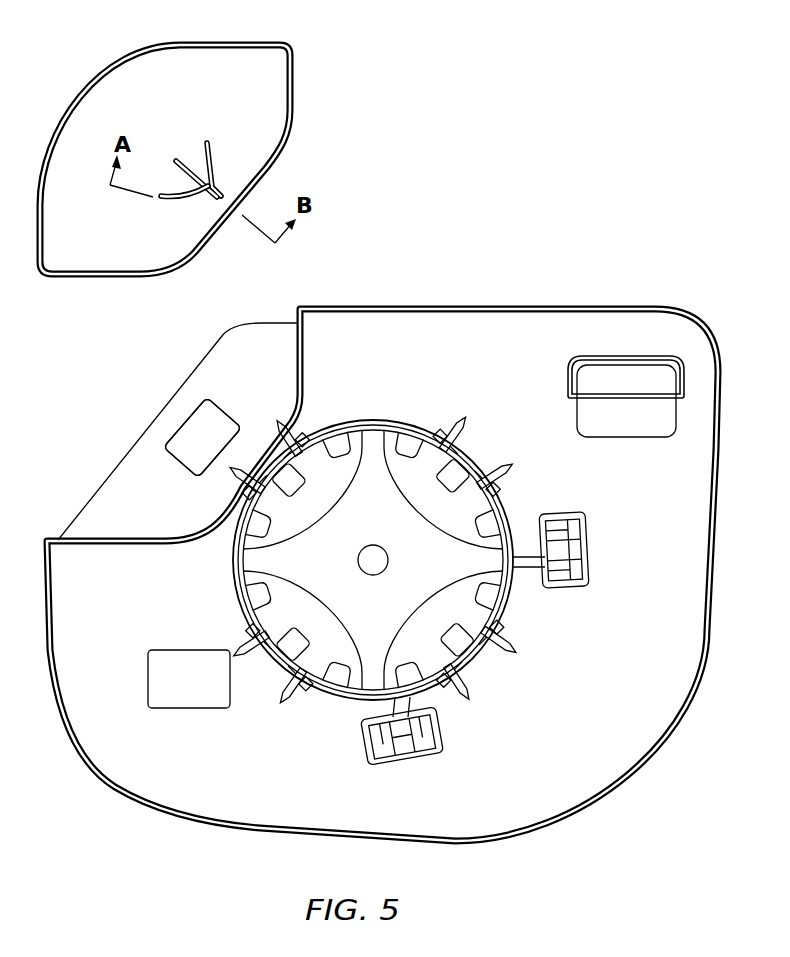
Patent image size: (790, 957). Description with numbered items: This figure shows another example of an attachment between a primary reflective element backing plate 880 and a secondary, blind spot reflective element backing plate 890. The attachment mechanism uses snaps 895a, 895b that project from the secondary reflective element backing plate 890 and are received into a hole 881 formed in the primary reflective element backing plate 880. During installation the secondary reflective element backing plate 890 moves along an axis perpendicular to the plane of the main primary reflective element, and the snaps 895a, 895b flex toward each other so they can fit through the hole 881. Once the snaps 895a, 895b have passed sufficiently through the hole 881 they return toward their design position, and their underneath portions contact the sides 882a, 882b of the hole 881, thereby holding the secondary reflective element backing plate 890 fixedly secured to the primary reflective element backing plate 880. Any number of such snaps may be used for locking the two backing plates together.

The primary reflective element backing plate 880 is at (467, 328).
The hole 881 is at (183, 437).
The side of hole 882a is at (180, 463).
The side of hole 882b is at (236, 420).
The secondary reflective element backing plate 890 is at (212, 67).
The snap 895a is at (215, 170).
The snap 895b is at (163, 200).